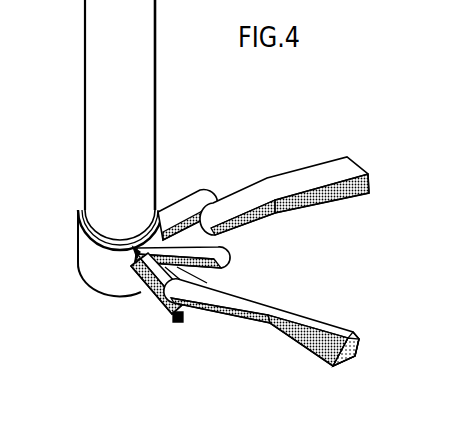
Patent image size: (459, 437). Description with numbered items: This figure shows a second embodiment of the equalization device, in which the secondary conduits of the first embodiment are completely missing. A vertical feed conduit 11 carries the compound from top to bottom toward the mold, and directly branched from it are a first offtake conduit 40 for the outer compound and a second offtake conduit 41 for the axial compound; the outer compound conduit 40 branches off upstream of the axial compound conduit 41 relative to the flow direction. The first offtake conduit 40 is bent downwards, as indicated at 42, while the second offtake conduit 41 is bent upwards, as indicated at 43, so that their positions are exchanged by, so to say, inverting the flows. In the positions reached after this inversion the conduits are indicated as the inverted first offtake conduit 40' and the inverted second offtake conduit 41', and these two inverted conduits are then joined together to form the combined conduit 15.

The feed conduit 11 is at (85, 67).
The first offtake conduit 40 is at (118, 273).
The inverted first offtake conduit 40' is at (263, 221).
The downward bend 42 is at (226, 257).
The second offtake conduit 41 is at (157, 303).
The upward bend 43 is at (178, 320).
The inverted second offtake conduit 41' is at (261, 329).
The combined conduit 15 is at (333, 358).